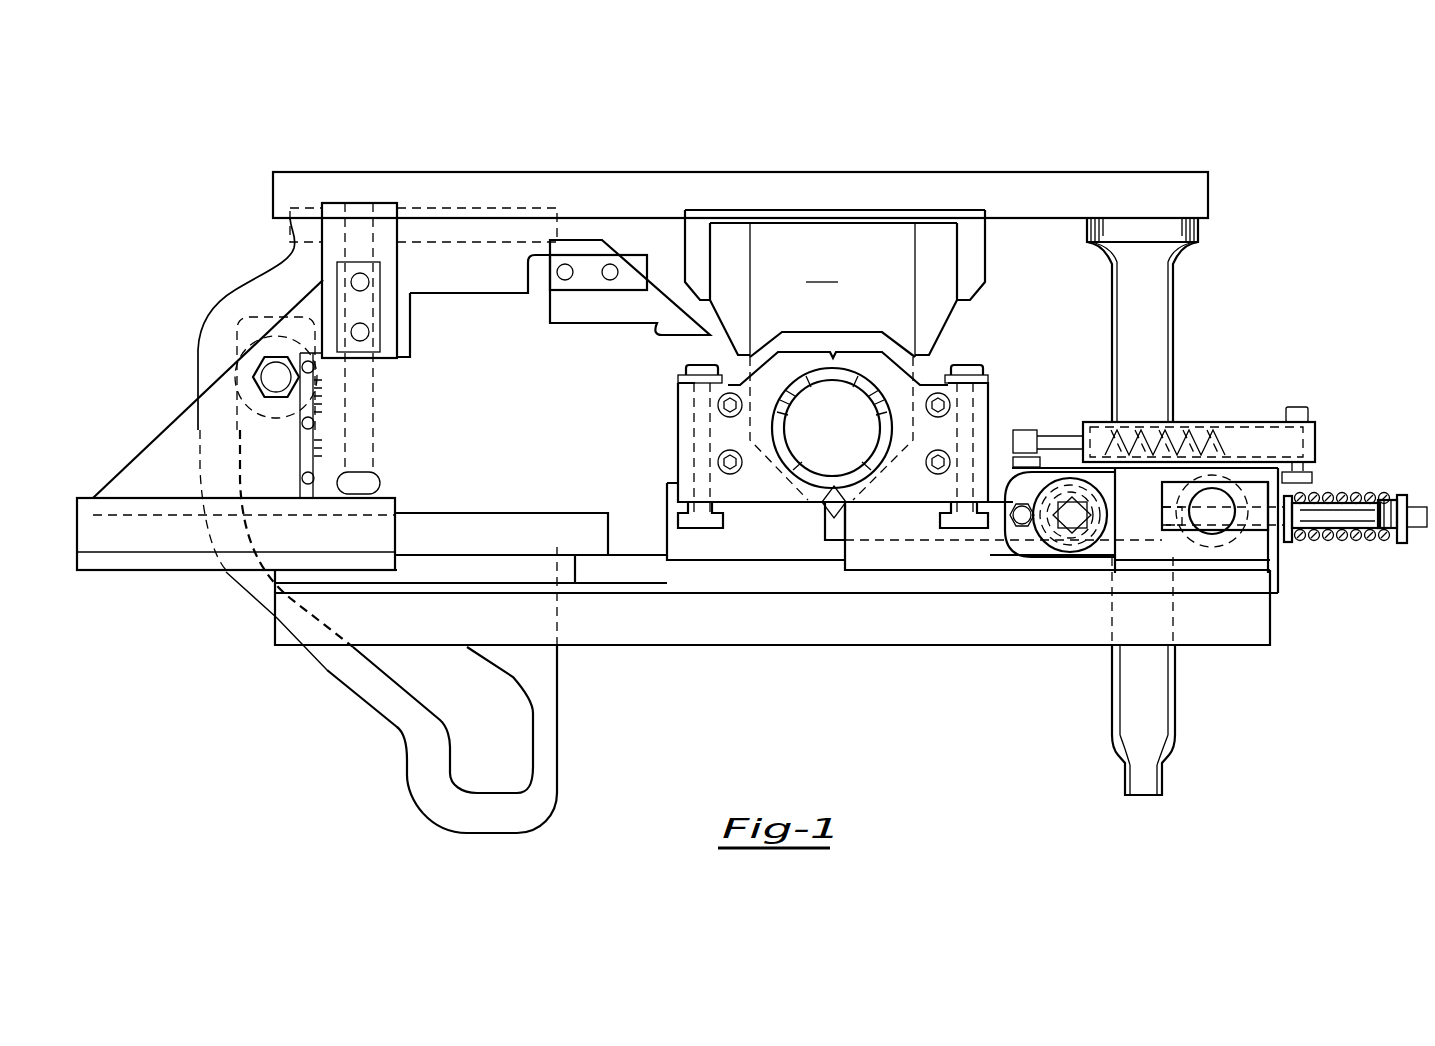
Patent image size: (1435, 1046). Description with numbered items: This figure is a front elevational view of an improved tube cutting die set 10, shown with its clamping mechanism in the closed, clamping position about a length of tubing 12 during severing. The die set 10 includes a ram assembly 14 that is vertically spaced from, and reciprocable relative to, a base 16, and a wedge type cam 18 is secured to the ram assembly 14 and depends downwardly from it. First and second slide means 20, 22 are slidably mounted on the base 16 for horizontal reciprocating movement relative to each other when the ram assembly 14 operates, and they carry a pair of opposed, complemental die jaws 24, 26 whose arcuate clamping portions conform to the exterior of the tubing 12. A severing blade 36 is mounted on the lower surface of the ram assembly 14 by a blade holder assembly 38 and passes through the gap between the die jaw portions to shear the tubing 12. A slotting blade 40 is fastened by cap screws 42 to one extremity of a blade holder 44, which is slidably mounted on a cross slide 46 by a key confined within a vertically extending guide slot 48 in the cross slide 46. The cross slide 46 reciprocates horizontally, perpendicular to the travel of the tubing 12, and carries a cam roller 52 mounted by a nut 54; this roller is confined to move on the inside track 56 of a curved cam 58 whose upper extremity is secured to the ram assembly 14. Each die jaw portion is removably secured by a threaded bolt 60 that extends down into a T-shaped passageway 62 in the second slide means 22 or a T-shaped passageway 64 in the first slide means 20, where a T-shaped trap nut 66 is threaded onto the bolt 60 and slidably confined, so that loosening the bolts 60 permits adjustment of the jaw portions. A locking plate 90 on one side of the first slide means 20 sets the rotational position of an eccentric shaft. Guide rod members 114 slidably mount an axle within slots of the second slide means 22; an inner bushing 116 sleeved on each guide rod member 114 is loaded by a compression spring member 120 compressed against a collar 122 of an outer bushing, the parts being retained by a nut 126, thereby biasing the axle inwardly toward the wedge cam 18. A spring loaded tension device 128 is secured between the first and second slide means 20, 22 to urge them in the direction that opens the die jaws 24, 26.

The die set 10 is at (1257, 312).
The tubing 12 is at (884, 410).
The ram assembly 14 is at (1062, 182).
The base 16 is at (737, 628).
The wedge type cam 18 is at (1163, 323).
The first slide means 20 is at (860, 548).
The second slide means 22 is at (712, 565).
The die jaw 24 is at (705, 410).
The die jaw 26 is at (897, 382).
The severing blade 36 is at (835, 355).
The blade holder assembly 38 is at (940, 305).
The slotting blade 40 is at (613, 305).
The cap screws 42 is at (610, 265).
The blade holder 44 is at (483, 280).
The cross slide 46 is at (148, 452).
The guide slot 48 is at (380, 410).
The cam roller 52 is at (247, 362).
The nut 54 is at (274, 362).
The inside track 56 is at (452, 722).
The curved cam 58 is at (377, 705).
The threaded bolt 60 is at (686, 370).
The T-shaped passageway 62 is at (680, 517).
The T-shaped passageway 64 is at (943, 530).
The T-shaped trap nut 66 is at (715, 547).
The locking plate 90 is at (1026, 550).
The guide rod member 114 is at (1327, 513).
The inner bushing 116 is at (1288, 548).
The compression spring member 120 is at (1353, 543).
The collar 122 is at (1403, 495).
The nut 126 is at (1420, 538).
The spring loaded tension device 128 is at (1232, 420).